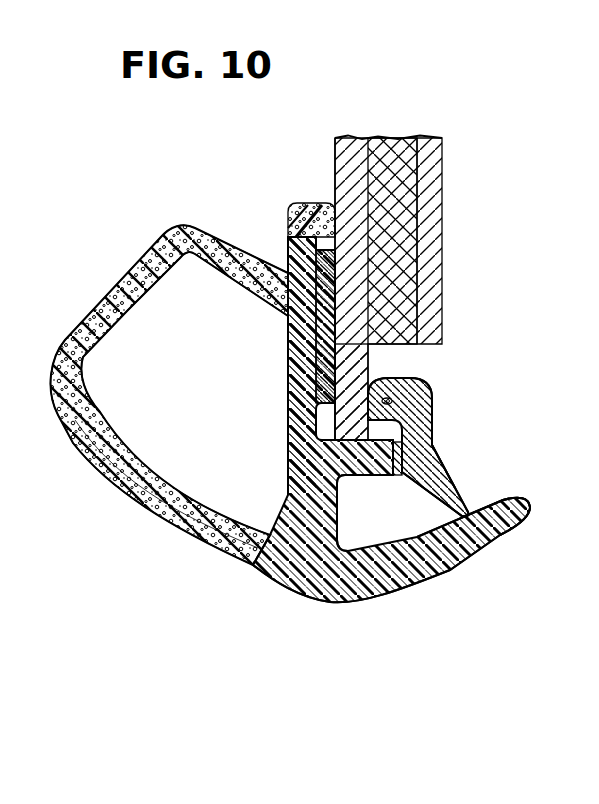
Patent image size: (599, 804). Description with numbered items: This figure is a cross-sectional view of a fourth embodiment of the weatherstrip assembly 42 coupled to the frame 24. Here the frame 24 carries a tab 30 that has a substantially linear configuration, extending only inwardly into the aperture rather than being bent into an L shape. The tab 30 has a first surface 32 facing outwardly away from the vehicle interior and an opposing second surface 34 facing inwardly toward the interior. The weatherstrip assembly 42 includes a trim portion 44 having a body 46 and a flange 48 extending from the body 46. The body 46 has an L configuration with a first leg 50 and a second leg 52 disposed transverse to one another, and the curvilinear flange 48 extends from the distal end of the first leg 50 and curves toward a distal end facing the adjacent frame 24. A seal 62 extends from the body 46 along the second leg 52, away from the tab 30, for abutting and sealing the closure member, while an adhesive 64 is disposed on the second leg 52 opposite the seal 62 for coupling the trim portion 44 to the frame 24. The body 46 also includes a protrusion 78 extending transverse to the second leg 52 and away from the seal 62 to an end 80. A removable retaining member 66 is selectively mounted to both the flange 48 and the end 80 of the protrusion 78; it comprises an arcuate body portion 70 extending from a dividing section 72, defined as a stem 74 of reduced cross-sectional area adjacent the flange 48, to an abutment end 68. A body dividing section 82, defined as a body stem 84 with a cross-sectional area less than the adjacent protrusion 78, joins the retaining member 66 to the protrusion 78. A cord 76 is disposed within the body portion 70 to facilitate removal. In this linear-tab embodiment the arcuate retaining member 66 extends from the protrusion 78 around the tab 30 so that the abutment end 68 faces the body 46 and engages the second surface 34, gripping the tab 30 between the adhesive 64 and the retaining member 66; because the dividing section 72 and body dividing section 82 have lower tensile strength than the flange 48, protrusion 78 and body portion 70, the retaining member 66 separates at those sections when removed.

The frame 24 is at (343, 230).
The tab 30 is at (325, 238).
The first surface 32 is at (303, 203).
The second surface 34 is at (368, 352).
The weatherstrip assembly 42 is at (319, 417).
The trim portion 44 is at (372, 448).
The body 46 is at (283, 335).
The flange 48 is at (483, 548).
The first leg 50 is at (398, 577).
The second leg 52 is at (300, 408).
The seal 62 is at (115, 480).
The adhesive 64 is at (325, 353).
The retaining member 66 is at (377, 411).
The abutment end 68 is at (380, 402).
The body portion 70 is at (440, 462).
The dividing section 72 is at (487, 495).
The stem 74 is at (527, 503).
The cord 76 is at (425, 386).
The protrusion 78 is at (370, 460).
The end 80 is at (438, 443).
The body dividing section 82 is at (398, 482).
The body stem 84 is at (395, 476).